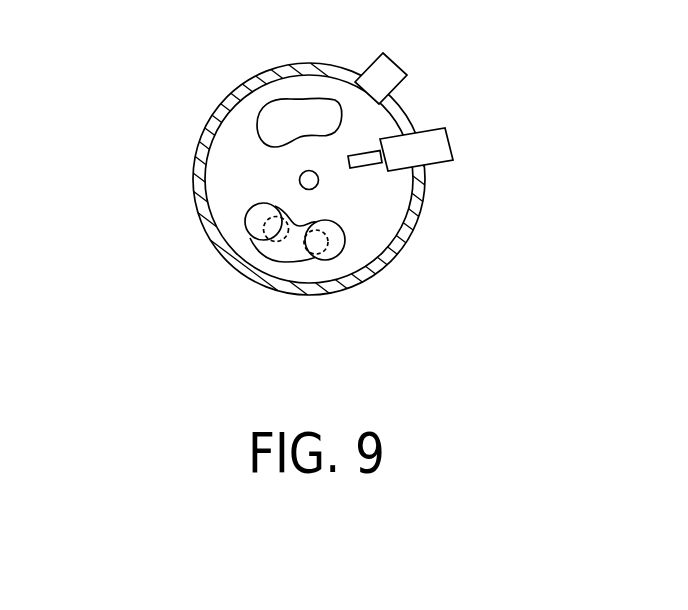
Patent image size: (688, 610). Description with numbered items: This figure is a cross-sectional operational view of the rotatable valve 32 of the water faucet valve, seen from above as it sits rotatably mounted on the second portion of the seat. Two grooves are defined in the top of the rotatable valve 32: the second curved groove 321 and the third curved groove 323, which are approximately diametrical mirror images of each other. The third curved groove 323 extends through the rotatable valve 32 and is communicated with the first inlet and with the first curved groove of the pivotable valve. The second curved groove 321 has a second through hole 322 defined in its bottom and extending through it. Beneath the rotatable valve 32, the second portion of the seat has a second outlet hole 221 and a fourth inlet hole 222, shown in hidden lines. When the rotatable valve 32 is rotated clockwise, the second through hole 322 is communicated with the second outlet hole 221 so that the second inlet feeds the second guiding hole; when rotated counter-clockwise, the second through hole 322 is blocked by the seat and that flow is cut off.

The rotatable valve 32 is at (240, 150).
The third curved groove 323 is at (277, 125).
The second through hole 322 is at (250, 222).
The second curved groove 321 is at (296, 245).
The second outlet hole 221 is at (272, 240).
The fourth inlet hole 222 is at (325, 238).